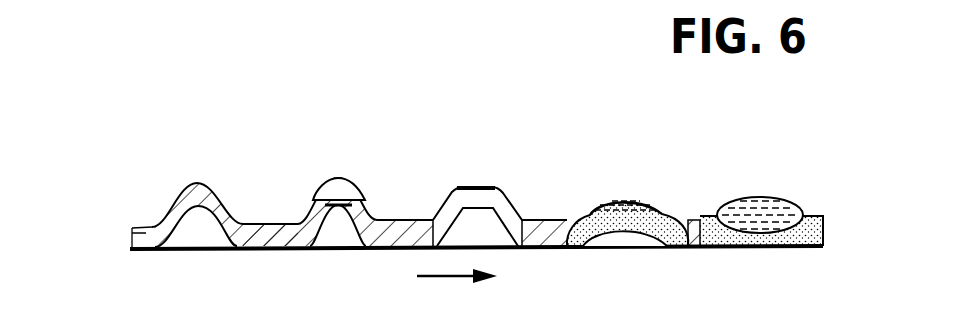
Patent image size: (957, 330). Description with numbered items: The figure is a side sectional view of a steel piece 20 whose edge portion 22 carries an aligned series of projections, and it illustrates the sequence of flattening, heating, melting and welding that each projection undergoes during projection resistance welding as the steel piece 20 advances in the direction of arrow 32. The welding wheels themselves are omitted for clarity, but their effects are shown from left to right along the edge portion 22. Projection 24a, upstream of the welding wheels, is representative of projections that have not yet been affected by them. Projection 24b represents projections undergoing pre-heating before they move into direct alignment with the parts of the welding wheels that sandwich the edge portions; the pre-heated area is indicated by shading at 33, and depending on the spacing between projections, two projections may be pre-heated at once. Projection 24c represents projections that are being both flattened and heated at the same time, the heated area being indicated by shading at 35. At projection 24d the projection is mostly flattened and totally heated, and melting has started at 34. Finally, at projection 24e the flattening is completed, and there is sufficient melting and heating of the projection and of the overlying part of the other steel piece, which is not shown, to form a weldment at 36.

The steel piece 20 is at (190, 252).
The edge portion 22 is at (464, 174).
The projection 24a is at (217, 192).
The projection 24b is at (373, 208).
The projection 24c is at (510, 204).
The projection 24d is at (677, 216).
The projection 24e is at (810, 214).
The arrow 32 is at (427, 278).
The pre-heating area 33 is at (335, 177).
The melting area 34 is at (617, 199).
The heating area 35 is at (472, 186).
The weldment 36 is at (762, 197).